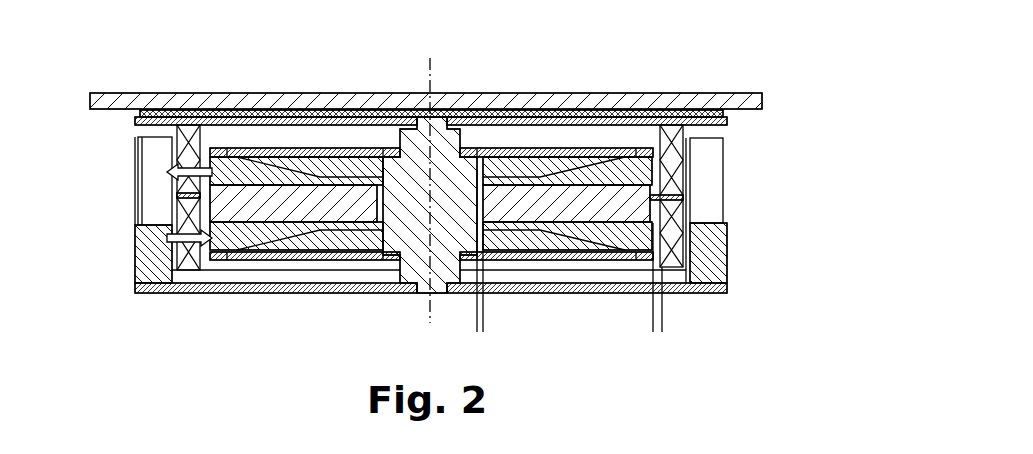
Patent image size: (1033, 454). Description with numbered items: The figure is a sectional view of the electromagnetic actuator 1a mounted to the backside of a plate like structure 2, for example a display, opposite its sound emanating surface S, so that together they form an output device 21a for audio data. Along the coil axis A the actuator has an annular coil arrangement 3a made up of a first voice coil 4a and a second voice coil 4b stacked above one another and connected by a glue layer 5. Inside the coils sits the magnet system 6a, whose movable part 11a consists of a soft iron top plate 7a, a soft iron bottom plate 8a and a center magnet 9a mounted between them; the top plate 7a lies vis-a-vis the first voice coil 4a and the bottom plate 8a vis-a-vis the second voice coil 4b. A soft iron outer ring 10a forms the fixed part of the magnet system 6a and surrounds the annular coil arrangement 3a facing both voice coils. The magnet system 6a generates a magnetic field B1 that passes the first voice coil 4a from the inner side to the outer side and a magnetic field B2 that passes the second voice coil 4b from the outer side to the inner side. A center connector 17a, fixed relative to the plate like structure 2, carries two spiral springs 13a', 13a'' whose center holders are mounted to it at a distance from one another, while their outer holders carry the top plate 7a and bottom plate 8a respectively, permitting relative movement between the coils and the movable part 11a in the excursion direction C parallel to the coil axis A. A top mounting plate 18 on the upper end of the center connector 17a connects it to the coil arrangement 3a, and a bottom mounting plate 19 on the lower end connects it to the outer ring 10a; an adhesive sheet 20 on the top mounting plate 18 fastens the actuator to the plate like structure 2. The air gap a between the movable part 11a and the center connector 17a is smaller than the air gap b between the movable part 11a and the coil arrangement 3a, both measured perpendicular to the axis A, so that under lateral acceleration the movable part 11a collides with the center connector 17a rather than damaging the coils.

The electromagnetic actuator 1a is at (720, 315).
The plate like structure 2 is at (190, 100).
The annular coil arrangement 3a is at (58, 155).
The first voice coil 4a is at (182, 153).
The second voice coil 4b is at (182, 248).
The glue layer 5 is at (182, 195).
The magnet system 6a is at (862, 160).
The top plate 7a is at (638, 163).
The bottom plate 8a is at (635, 247).
The center magnet 9a is at (642, 207).
The outer ring 10a is at (718, 265).
The movable part of the magnet system 11a is at (797, 132).
The first spiral spring 13a' is at (442, 100).
The second spiral spring 13a'' is at (431, 295).
The center connector 17a is at (453, 128).
The top mounting plate 18 is at (137, 120).
The bottom mounting plate 19 is at (150, 287).
The adhesive sheet 20 is at (152, 113).
The output device 21a is at (738, 52).
The coil axis A is at (415, 183).
The magnetic field B1 is at (200, 172).
The magnetic field B2 is at (207, 243).
The excursion direction C is at (457, 14).
The sound emanating surface S is at (362, 86).
The air gap a is at (443, 326).
The air gap b is at (695, 327).